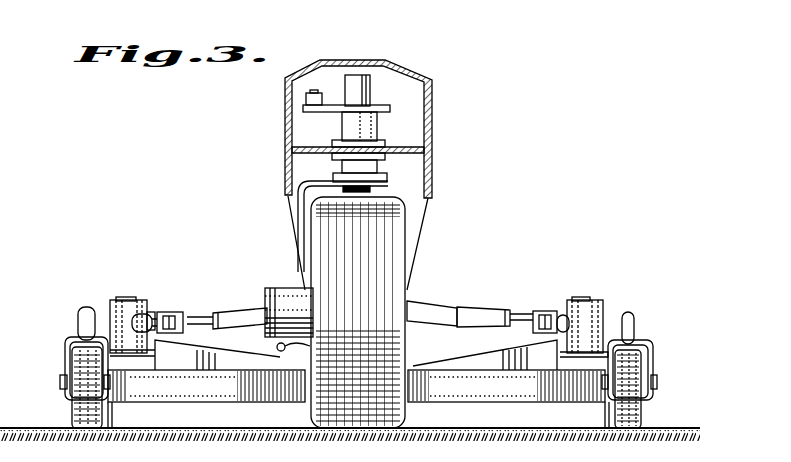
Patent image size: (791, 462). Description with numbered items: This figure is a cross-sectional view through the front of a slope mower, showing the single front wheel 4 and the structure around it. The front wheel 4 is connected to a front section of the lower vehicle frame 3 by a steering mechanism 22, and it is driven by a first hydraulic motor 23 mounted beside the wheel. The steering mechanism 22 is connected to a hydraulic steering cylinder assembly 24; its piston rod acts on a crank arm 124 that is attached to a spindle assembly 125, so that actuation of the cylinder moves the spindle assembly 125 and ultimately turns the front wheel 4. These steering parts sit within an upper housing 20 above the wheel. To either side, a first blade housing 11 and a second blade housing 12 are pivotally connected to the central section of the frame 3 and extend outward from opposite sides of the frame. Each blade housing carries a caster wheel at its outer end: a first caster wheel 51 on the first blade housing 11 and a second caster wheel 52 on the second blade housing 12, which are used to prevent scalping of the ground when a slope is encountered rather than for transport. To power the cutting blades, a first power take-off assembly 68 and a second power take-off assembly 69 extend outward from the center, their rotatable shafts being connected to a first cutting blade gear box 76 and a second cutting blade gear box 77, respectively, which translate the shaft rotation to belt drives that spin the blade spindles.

The housing 20 is at (432, 80).
The lower vehicle frame 3 is at (424, 214).
The crank arm 124 is at (372, 109).
The hydraulic steering cylinder assembly 24 is at (321, 101).
The spindle assembly 125 is at (378, 124).
The steering mechanism 22 is at (298, 224).
The front wheel 4 is at (407, 418).
The second blade housing 12 is at (191, 397).
The first blade housing 11 is at (496, 394).
The first hydraulic motor 23 is at (265, 290).
The second power take-off assembly 69 is at (231, 314).
The second cutting blade gear box 77 is at (112, 302).
The first power take-off assembly 68 is at (480, 310).
The first cutting blade gear box 76 is at (608, 290).
The second caster wheel 52 is at (72, 413).
The first caster wheel 51 is at (641, 416).